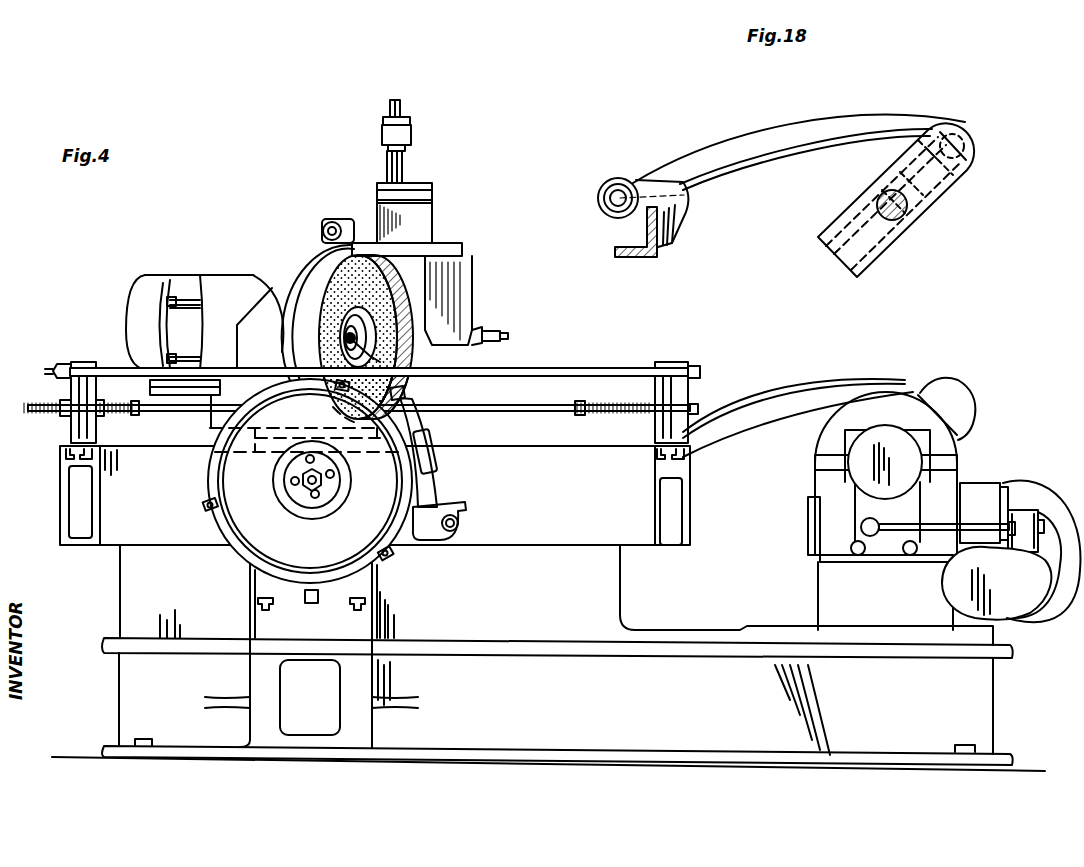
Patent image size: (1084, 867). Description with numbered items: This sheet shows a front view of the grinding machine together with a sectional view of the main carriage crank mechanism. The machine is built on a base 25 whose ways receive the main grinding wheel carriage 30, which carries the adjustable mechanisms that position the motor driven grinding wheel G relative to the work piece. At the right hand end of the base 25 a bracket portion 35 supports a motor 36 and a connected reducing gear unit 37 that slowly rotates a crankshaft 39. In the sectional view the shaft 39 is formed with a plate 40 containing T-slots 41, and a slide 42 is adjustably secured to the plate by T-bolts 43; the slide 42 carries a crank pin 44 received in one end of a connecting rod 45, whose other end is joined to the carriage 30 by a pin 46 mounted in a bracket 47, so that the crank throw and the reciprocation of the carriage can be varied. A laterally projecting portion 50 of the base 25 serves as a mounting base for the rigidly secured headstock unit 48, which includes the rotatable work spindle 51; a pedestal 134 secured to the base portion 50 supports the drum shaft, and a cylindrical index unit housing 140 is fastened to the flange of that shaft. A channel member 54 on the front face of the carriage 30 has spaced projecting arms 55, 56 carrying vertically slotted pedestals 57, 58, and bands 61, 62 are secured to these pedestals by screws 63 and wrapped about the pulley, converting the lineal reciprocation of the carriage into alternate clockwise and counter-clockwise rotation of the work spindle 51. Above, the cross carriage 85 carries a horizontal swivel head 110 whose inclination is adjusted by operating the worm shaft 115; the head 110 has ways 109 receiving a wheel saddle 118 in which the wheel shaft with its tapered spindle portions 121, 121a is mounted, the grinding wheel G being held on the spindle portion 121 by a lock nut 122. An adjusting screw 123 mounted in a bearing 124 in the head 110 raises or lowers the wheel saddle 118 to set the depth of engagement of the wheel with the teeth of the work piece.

In FIG. 4, the base 25 is at (586, 698).
In FIG. 4, the laterally projecting portion 50 is at (350, 708).
In FIG. 4, the pedestal 134 is at (378, 590).
In FIG. 4, the channel member 54 is at (524, 490).
In FIG. 4, the cylindrical index unit housing 140 is at (205, 483).
In FIG. 4, the projecting arm 56 is at (689, 494).
In FIG. 4, the vertically slotted pedestal 57 is at (76, 360).
In FIG. 4, the vertically slotted pedestal 58 is at (690, 400).
In FIG. 4, the band 62 is at (515, 414).
In FIG. 4, the projecting arm 55 is at (75, 448).
In FIG. 4, the screws 63 is at (596, 416).
In FIG. 4, the band 61 is at (186, 412).
In FIG. 4, the cross carriage 85 is at (280, 328).
In FIG. 4, the adjusting screw 123 is at (400, 106).
In FIG. 4, the bearing 124 is at (406, 158).
In FIG. 4, the ways 109 is at (432, 222).
In FIG. 4, the wheel saddle 118 is at (448, 262).
In FIG. 4, the tapered spindle portion 121a is at (500, 336).
In FIG. 4, the shaft 115 is at (322, 231).
In FIG. 4, the grinding wheel G is at (395, 288).
In FIG. 4, the lock nut 122 is at (346, 346).
In FIG. 4, the horizontal swivel head 110 is at (322, 310).
In FIG. 4, the tapered spindle portion 121 is at (348, 337).
In FIG. 4, the headstock unit 48 is at (215, 562).
In FIG. 4, the work spindle 51 is at (303, 485).
In FIG. 4, the bracket portion 35 is at (818, 594).
In FIG. 4, the connecting rod 45 is at (758, 440).
In FIG. 18, the connecting rod 45 is at (803, 125).
In FIG. 4, the reducing gear unit 37 is at (983, 480).
In FIG. 4, the motor 36 is at (1052, 462).
In FIG. 18, the pin 46 is at (598, 197).
In FIG. 18, the bracket 47 is at (680, 222).
In FIG. 18, the main grinding wheel carriage 30 is at (657, 257).
In FIG. 18, the plate 40 is at (870, 245).
In FIG. 18, the T-slots 41 is at (910, 235).
In FIG. 18, the T-bolts 43 is at (955, 190).
In FIG. 18, the crankshaft 39 is at (907, 215).
In FIG. 18, the crank pin 44 is at (962, 136).
In FIG. 18, the slide 42 is at (974, 154).